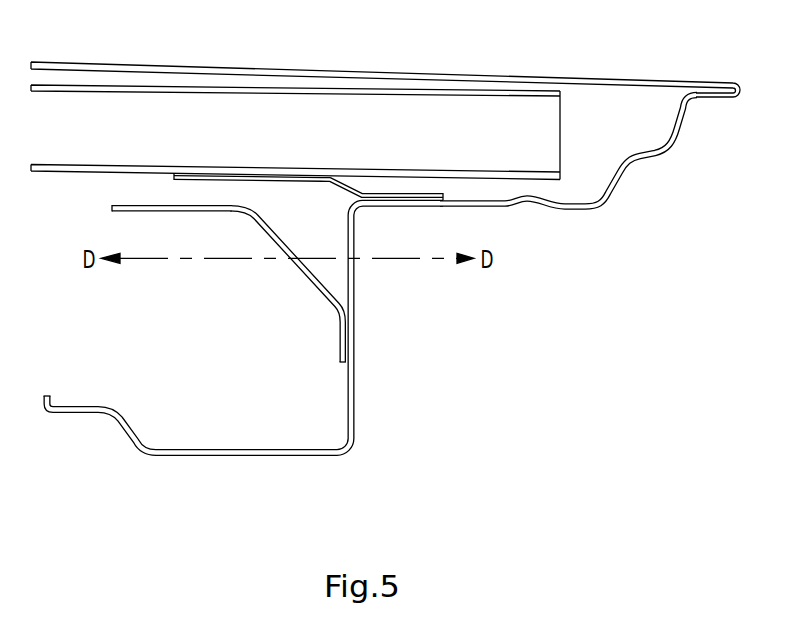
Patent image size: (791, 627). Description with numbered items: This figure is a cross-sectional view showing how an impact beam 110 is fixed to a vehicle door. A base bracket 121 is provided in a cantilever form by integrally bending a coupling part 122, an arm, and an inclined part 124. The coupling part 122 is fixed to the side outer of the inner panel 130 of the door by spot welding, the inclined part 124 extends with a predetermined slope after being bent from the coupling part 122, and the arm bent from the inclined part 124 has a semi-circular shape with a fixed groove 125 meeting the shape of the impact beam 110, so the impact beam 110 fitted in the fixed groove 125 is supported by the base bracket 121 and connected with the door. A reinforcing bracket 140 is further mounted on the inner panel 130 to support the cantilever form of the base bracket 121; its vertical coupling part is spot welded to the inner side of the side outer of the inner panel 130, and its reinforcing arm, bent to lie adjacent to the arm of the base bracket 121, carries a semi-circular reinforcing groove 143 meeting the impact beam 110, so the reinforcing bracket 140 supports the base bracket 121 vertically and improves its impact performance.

The impact beam 110 is at (437, 120).
The base bracket 121 is at (316, 181).
The coupling part 122 is at (433, 201).
The inclined part 124 is at (353, 188).
The fixed groove 125 is at (248, 177).
The inner panel 130 is at (328, 402).
The reinforcing bracket 140 is at (327, 285).
The reinforcing groove 143 is at (175, 211).